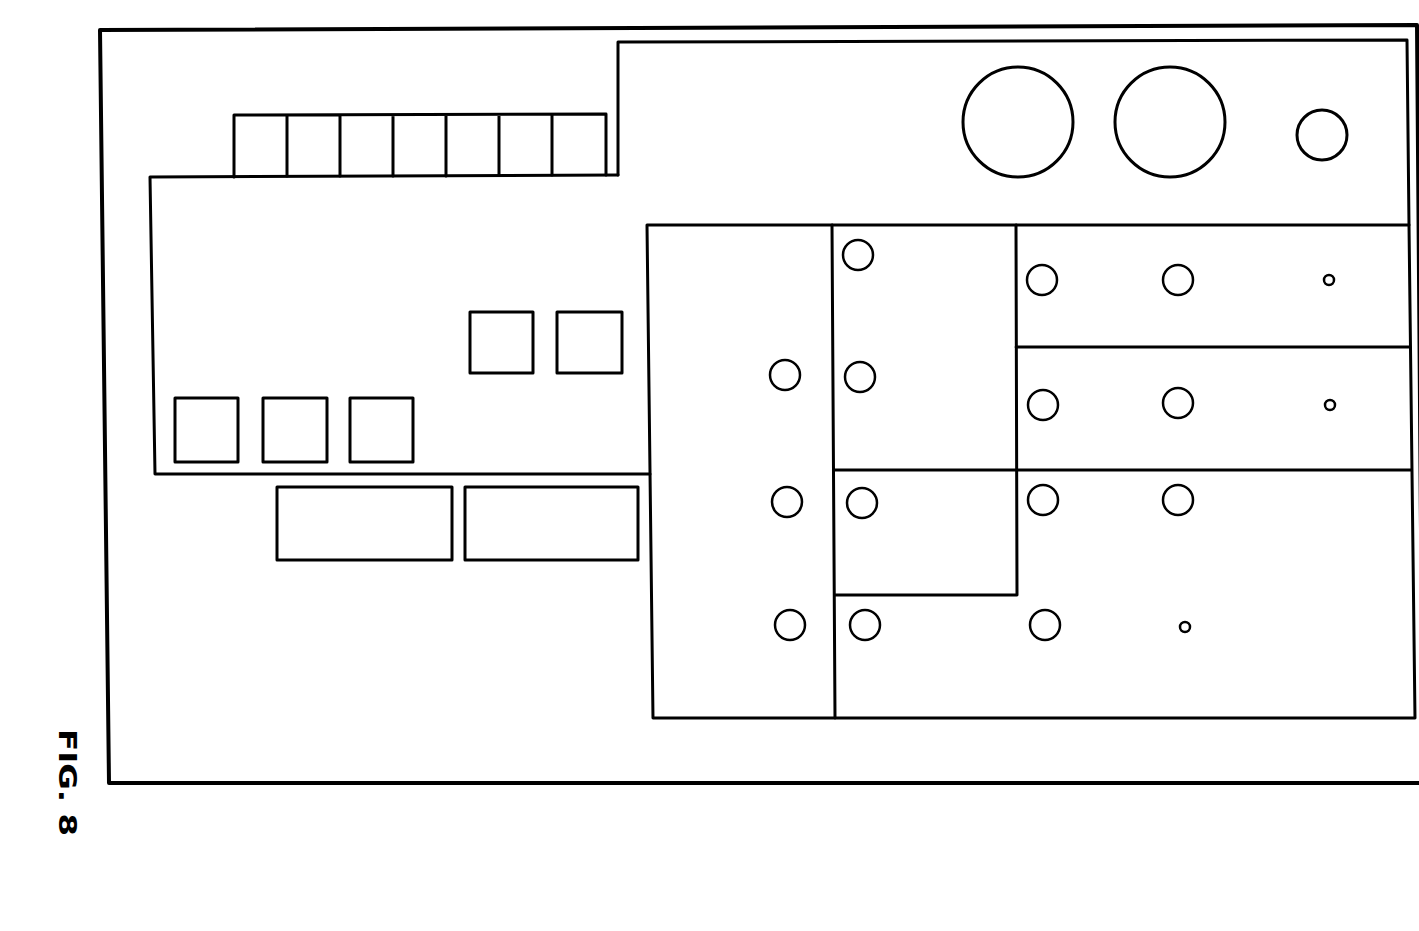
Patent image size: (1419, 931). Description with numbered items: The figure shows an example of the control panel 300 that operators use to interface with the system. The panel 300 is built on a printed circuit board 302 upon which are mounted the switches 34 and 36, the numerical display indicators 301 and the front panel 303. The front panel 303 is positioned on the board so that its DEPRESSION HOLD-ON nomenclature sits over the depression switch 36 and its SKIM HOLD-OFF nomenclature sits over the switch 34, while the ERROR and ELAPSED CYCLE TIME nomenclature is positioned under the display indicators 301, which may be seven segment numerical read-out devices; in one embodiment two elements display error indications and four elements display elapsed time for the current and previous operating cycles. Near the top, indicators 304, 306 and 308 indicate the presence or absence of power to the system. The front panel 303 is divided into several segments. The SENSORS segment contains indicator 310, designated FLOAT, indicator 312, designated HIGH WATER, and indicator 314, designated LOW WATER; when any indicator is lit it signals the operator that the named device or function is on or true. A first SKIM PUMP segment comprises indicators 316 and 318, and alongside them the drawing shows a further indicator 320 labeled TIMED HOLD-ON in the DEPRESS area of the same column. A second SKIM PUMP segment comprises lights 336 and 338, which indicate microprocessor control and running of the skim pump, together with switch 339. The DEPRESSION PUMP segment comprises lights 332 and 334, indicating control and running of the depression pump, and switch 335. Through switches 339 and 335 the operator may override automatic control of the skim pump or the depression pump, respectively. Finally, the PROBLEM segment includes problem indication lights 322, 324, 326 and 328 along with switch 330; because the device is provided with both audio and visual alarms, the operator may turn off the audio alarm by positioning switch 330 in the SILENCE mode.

The control panel 300 is at (325, 869).
The numerical display indicators 301 is at (527, 114).
The printed circuit board 302 is at (503, 782).
The front panel 303 is at (703, 148).
The indicator 304 is at (980, 83).
The indicator 306 is at (1208, 83).
The indicator 308 is at (1323, 111).
The FLOAT indicator 310 is at (780, 361).
The HIGH WATER indicator 312 is at (785, 487).
The LOW WATER indicator 314 is at (788, 610).
The indicator 316 is at (874, 203).
The indicator 318 is at (850, 389).
The depress timed hold-on indicator 320 is at (852, 515).
The problem indication light 322 is at (858, 639).
The problem indication light 324 is at (1040, 515).
The problem indication light 326 is at (1035, 640).
The problem indication light 328 is at (1176, 515).
The switch 330 is at (1183, 633).
The indicator light 332 is at (1058, 399).
The indicator light 334 is at (1192, 397).
The switch 335 is at (1330, 400).
The indicator light 336 is at (1067, 270).
The indicator light 338 is at (1192, 273).
The switch 339 is at (1329, 275).
The switch 34 is at (482, 560).
The depression switch 36 is at (383, 560).